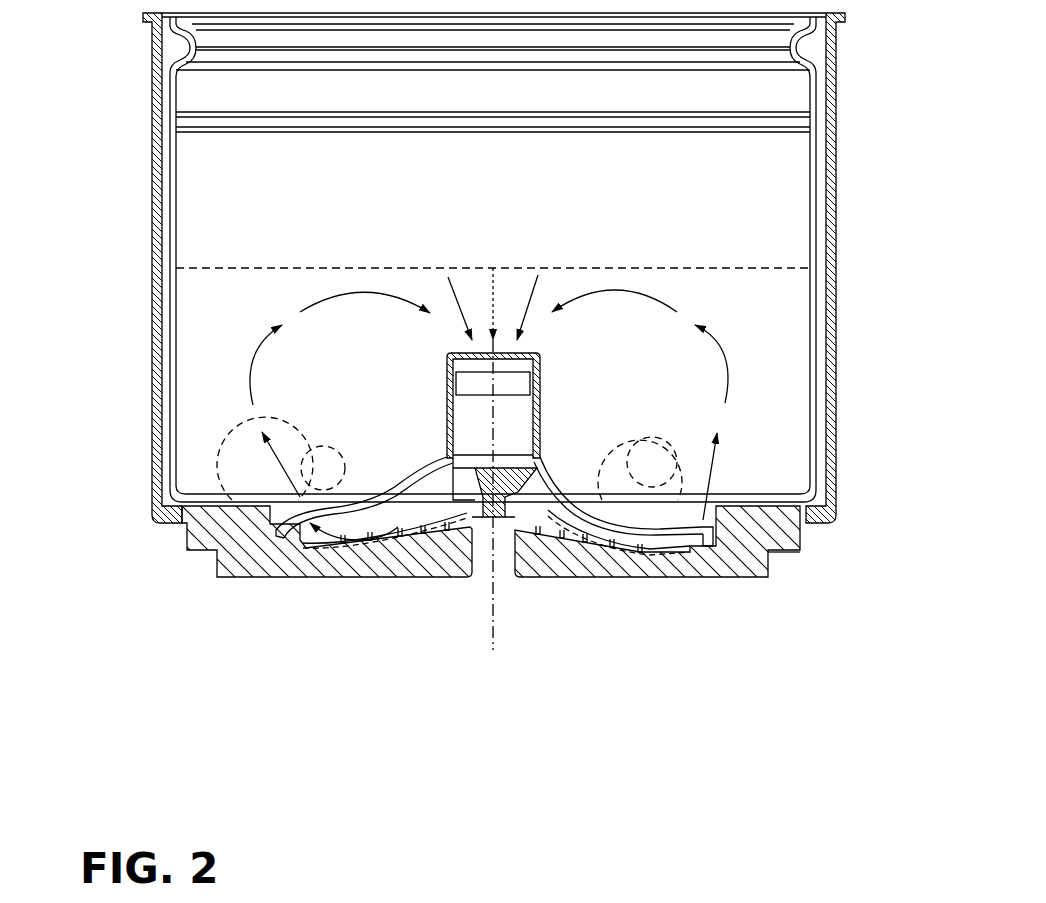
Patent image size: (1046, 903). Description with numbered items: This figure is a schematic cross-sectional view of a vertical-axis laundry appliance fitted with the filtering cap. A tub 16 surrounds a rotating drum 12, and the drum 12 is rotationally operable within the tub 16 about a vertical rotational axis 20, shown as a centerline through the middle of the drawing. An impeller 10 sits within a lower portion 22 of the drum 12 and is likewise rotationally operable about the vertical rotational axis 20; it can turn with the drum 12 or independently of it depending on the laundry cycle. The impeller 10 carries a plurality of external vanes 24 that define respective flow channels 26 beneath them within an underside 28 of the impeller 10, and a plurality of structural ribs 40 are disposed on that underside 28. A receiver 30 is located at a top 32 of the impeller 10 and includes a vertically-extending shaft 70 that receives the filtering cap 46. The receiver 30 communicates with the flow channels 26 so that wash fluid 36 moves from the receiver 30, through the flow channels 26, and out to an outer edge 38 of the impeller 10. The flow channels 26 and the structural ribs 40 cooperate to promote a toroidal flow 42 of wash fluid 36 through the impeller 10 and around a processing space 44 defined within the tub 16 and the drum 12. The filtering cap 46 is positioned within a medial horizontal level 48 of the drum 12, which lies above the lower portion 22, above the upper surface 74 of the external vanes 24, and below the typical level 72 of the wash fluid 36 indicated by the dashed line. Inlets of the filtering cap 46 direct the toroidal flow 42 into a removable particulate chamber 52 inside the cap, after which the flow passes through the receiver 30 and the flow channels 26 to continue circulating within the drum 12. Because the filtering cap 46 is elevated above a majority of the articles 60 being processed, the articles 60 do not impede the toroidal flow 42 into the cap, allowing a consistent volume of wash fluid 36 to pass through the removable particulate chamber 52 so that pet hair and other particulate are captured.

The impeller 10 is at (710, 513).
The rotating drum 12 is at (815, 200).
The tub 16 is at (152, 50).
The vertical rotational axis 20 is at (497, 598).
The lower portion 22 is at (250, 468).
The external vanes 24 is at (388, 490).
The flow channels 26 is at (390, 505).
The underside 28 is at (438, 535).
The receiver 30 is at (545, 442).
The top 32 is at (545, 480).
The wash fluid 36 is at (265, 315).
The outer edge 38 is at (773, 553).
The structural ribs 40 is at (603, 540).
The toroidal flow 42 is at (255, 346).
The processing space 44 is at (250, 233).
The filtering cap 46 is at (503, 345).
The medial horizontal level 48 is at (735, 338).
The removable particulate chamber 52 is at (540, 376).
The articles 60 is at (672, 567).
The vertically-extending shaft 70 is at (445, 380).
The typical level 72 is at (743, 268).
The upper surface 74 is at (577, 518).